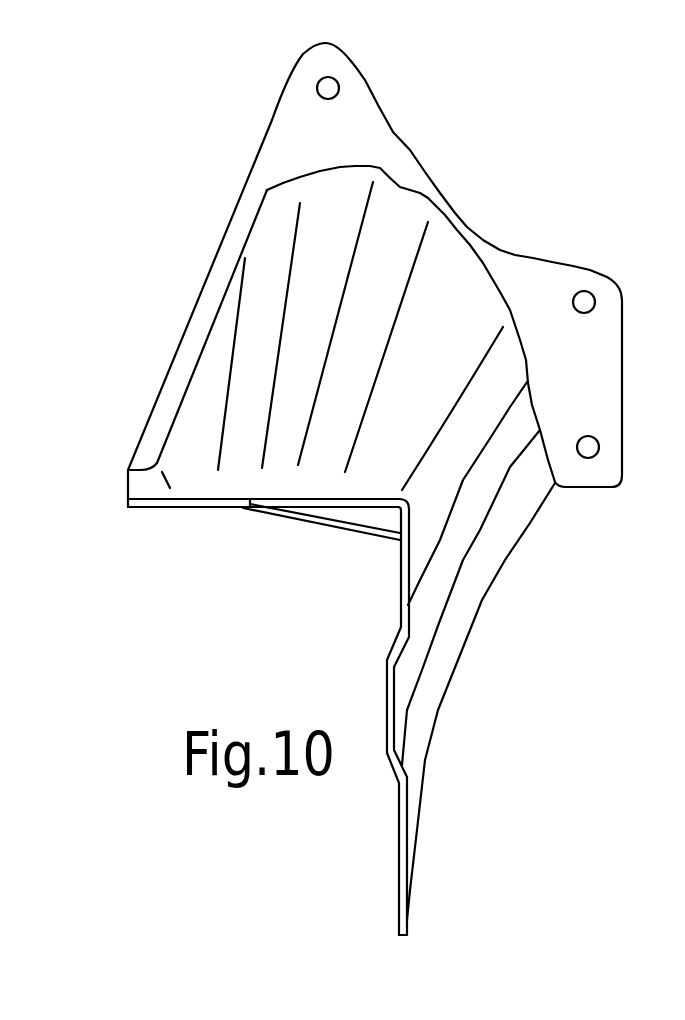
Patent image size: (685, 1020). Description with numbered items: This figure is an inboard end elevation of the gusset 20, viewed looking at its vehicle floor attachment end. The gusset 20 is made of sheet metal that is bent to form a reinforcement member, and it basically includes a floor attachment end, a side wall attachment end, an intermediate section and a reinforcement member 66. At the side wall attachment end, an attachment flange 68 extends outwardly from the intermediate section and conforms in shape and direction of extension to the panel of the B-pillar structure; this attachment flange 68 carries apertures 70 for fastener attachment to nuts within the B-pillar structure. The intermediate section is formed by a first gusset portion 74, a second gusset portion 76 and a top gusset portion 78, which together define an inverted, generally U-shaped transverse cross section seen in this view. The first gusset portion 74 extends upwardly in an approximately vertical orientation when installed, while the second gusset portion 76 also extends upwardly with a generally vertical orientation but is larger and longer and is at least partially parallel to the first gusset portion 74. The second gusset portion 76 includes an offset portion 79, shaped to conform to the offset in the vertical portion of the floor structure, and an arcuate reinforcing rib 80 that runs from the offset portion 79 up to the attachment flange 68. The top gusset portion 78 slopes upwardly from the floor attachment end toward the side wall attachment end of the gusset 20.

The gusset 20 is at (517, 200).
The reinforcement member 66 is at (340, 528).
The attachment flange 68 is at (373, 142).
The apertures 70 is at (328, 88).
The first gusset portion 74 is at (185, 432).
The second gusset portion 76 is at (433, 678).
The top gusset portion 78 is at (322, 333).
The offset portion 79 is at (392, 713).
The reinforcing rib 80 is at (455, 543).